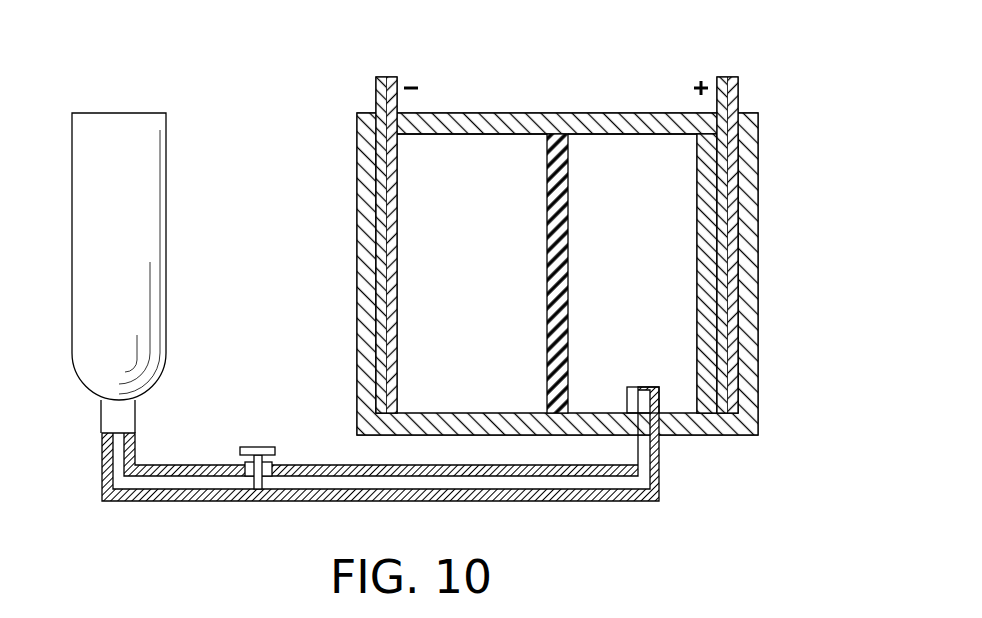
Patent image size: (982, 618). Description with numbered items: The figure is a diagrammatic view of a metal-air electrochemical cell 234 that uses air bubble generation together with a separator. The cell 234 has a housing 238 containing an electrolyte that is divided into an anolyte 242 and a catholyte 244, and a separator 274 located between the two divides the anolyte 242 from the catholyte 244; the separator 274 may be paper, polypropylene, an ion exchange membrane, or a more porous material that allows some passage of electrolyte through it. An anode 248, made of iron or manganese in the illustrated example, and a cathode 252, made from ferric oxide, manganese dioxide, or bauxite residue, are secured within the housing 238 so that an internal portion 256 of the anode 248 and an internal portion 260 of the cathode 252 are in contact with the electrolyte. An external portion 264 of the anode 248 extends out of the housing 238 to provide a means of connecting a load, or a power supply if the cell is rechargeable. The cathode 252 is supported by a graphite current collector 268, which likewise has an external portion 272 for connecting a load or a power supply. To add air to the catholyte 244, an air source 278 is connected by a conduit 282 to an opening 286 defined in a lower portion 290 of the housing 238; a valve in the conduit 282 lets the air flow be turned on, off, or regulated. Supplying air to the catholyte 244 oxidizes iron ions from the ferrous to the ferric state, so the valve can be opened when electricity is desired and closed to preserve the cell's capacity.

The metal air cell 234 is at (272, 130).
The housing 238 is at (367, 165).
The anolyte 242 is at (452, 276).
The catholyte 244 is at (614, 276).
The anode 248 is at (385, 250).
The cathode 252 is at (705, 278).
The internal portion of anode 256 is at (385, 305).
The internal portion of cathode 260 is at (722, 234).
The external portion of anode 264 is at (341, 212).
The current collector 268 is at (728, 362).
The external portion of current collector 272 is at (768, 228).
The separator 274 is at (547, 175).
The air source 278 is at (99, 196).
The conduit 282 is at (320, 465).
The opening 286 is at (627, 413).
The lower portion of housing 290 is at (258, 447).